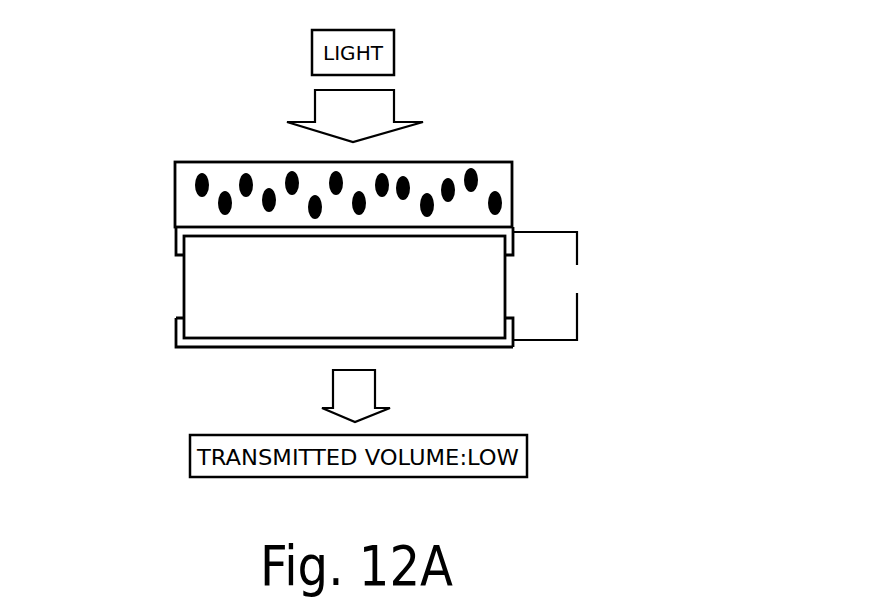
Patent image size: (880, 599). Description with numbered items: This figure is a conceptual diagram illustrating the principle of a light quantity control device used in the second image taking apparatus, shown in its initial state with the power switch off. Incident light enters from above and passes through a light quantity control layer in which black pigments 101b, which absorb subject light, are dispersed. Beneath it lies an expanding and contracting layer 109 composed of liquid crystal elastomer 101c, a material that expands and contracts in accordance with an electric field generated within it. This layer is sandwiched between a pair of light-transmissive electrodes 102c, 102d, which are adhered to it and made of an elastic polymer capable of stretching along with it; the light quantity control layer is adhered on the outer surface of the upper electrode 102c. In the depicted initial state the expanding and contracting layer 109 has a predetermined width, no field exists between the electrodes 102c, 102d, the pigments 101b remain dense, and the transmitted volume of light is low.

The black pigments 101b is at (476, 177).
The liquid crystal elastomer 101c is at (210, 290).
The expanding and contracting layer 109 is at (147, 270).
The light-transmissive electrode 102c is at (517, 250).
The light-transmissive electrode 102d is at (510, 350).